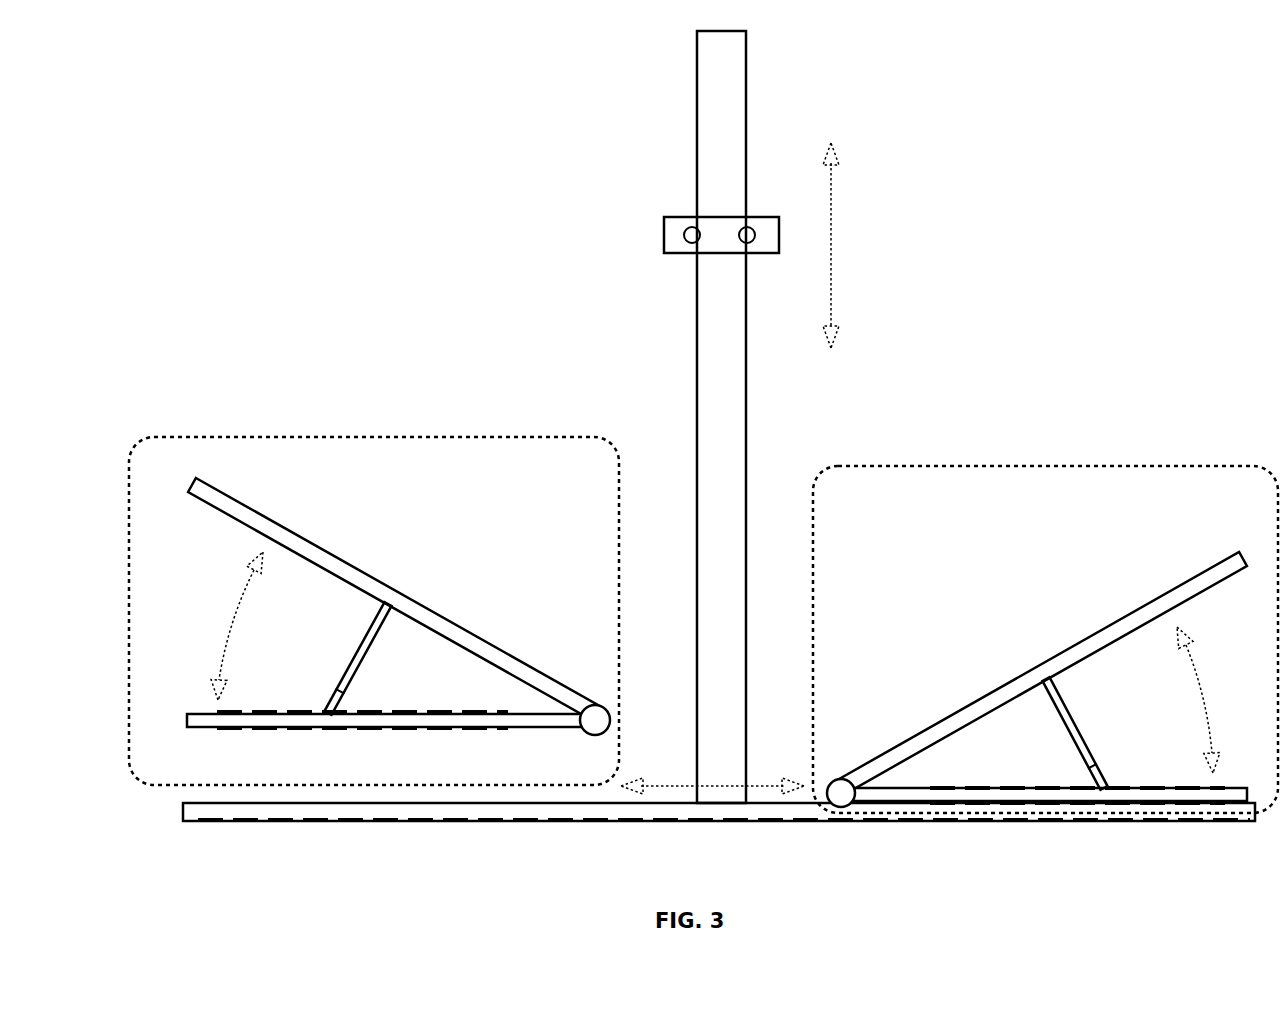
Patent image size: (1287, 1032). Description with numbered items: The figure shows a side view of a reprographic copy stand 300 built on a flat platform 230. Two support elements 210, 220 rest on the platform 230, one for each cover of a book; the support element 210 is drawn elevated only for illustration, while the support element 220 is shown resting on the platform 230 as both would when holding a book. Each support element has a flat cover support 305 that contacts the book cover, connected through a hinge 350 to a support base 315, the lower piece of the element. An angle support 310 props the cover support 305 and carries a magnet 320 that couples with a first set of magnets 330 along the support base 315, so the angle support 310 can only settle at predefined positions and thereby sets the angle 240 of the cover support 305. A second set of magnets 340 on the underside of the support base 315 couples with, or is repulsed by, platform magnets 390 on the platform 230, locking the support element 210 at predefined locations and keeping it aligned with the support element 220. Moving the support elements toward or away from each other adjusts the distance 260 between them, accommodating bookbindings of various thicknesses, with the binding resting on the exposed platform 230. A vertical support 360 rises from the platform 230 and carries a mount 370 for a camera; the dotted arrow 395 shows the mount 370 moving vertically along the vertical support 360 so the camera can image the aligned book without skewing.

The reprographic copy stand 300 is at (201, 88).
The support element 210 is at (345, 436).
The support element 220 is at (1033, 465).
The platform 230 is at (203, 823).
The angle 240 is at (222, 630).
The distance 260 is at (658, 783).
The cover support 305 is at (252, 504).
The angle support 310 is at (372, 632).
The support base 315 is at (208, 730).
The magnet 320 is at (334, 696).
The first set of magnets 330 is at (426, 710).
The second set of magnets 340 is at (357, 730).
The hinge 350 is at (596, 703).
The vertical support 360 is at (696, 344).
The mount 370 is at (680, 216).
The platform magnets 390 is at (431, 823).
The dotted arrow 395 is at (835, 246).